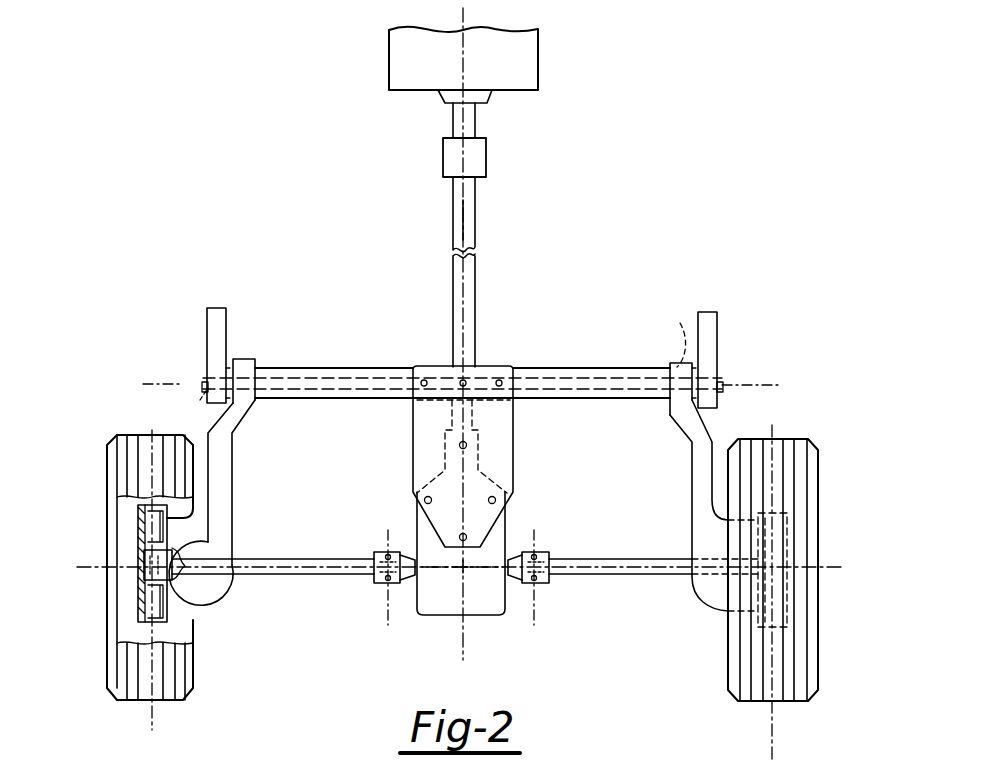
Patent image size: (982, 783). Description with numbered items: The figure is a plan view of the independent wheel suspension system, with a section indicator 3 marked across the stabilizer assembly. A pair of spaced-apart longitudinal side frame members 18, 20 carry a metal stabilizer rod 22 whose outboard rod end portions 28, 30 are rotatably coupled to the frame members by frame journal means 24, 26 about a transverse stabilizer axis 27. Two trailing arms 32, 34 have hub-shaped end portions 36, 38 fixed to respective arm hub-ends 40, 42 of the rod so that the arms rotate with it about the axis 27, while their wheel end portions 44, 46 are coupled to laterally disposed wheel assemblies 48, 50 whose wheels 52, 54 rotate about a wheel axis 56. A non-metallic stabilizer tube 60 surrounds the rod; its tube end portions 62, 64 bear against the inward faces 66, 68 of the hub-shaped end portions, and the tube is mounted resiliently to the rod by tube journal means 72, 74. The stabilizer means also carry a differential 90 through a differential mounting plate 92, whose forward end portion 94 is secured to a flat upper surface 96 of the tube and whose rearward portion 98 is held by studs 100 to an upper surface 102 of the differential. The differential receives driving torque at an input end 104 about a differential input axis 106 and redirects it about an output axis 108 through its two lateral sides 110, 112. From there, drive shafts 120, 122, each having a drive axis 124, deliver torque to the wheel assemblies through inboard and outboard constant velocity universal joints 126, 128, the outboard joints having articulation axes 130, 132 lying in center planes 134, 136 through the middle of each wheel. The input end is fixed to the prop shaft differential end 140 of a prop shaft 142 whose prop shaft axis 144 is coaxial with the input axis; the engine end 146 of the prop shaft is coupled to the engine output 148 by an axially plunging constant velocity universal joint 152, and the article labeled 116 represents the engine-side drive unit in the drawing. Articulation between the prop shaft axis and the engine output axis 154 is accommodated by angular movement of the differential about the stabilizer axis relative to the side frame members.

The section line 3 is at (152, 388).
The longitudinal side frame member 18 is at (207, 335).
The longitudinal side frame member 20 is at (717, 336).
The stabilizer rod 22 is at (285, 366).
The frame journal means 24 is at (722, 385).
The frame journal means 26 is at (208, 380).
The transverse stabilizer axis 27 is at (143, 383).
The outboard rod end portion 28 is at (717, 403).
The outboard rod end portion 30 is at (197, 412).
The trailing arm 32 is at (697, 485).
The trailing arm 34 is at (224, 482).
The hub-shaped end portion 36 is at (670, 365).
The hub-shaped end portion 38 is at (259, 368).
The arm hub-end 40 is at (670, 339).
The arm hub-end 42 is at (243, 358).
The wheel end portion 44 is at (698, 592).
The wheel end portion 46 is at (212, 592).
The wheel assembly 48 is at (703, 634).
The wheel assembly 50 is at (222, 658).
The wheel 52 is at (743, 701).
The wheel 54 is at (185, 697).
The wheel axis 56 is at (98, 567).
The stabilizer tube 60 is at (589, 402).
The tube end portion 62 is at (665, 410).
The tube end portion 64 is at (275, 368).
The inward face 66 is at (663, 428).
The inward face 68 is at (258, 402).
The tube journal means 72 is at (658, 400).
The tube journal means 74 is at (262, 398).
The differential 90 is at (421, 628).
The differential mounting plate 92 is at (410, 464).
The forward end portion 94 is at (495, 365).
The flat upper surface 96 is at (550, 372).
The rearward portion 98 is at (507, 497).
The studs 100 is at (424, 500).
The upper surface 102 is at (442, 610).
The input end 104 is at (467, 445).
The differential input axis 106 is at (463, 638).
The output axis 108 is at (483, 568).
The lateral side 110 is at (518, 600).
The lateral side 112 is at (417, 598).
The motor 116 is at (539, 63).
The drive shaft 120 is at (618, 577).
The drive shaft 122 is at (307, 577).
The drive axis 124 is at (290, 559).
The inboard constant velocity universal joint 126 is at (378, 584).
The outboard constant velocity universal joint 128 is at (170, 600).
The articulation axis 130 is at (757, 562).
The articulation axis 132 is at (167, 522).
The center plane 134 is at (772, 743).
The center plane 136 is at (152, 720).
The prop shaft differential end 140 is at (440, 429).
The prop shaft 142 is at (450, 278).
The prop shaft axis 144 is at (453, 228).
The engine end 146 is at (476, 213).
The engine output 148 is at (489, 97).
The constant velocity universal joint 152 is at (487, 157).
The engine output axis 154 is at (463, 13).